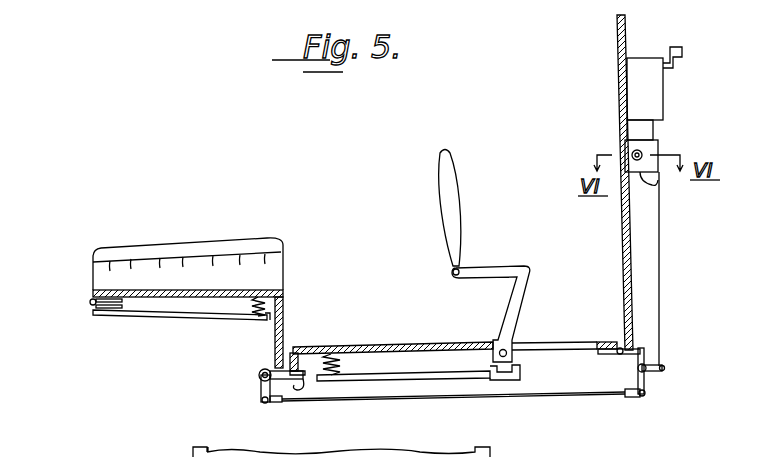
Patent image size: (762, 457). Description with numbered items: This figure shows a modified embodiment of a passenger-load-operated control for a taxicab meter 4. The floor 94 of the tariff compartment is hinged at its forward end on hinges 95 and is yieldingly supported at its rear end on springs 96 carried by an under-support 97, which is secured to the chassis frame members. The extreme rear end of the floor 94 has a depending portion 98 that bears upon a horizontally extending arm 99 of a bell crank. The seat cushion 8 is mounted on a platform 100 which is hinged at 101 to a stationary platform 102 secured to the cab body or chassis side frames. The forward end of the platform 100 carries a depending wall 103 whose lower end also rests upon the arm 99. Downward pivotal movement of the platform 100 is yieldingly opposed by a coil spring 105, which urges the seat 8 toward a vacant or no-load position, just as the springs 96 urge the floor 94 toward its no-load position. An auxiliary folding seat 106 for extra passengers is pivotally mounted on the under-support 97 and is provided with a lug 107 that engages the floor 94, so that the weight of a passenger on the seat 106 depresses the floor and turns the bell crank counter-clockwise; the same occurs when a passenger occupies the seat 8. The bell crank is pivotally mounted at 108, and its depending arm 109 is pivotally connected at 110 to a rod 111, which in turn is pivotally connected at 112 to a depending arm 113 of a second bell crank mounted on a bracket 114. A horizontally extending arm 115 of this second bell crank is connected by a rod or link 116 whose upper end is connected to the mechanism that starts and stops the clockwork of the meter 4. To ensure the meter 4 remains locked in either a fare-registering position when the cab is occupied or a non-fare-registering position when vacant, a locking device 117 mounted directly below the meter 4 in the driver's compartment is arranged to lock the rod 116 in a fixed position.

The meter 4 is at (656, 112).
The seat cushion 8 is at (186, 242).
The floor 94 is at (423, 345).
The hinges 95 is at (617, 353).
The springs 96 is at (346, 360).
The under-support 97 is at (430, 375).
The depending portion 98 is at (294, 350).
The horizontally extending arm 99 is at (311, 389).
The platform 100 is at (92, 294).
The hinge 101 is at (90, 304).
The stationary platform 102 is at (112, 321).
The depending wall 103 is at (284, 318).
The coil spring 105 is at (254, 306).
The auxiliary folding seat 106 is at (512, 229).
The lug 107 is at (497, 345).
The pivot 108 is at (258, 375).
The depending arm 109 is at (261, 388).
The pivotal connection 110 is at (265, 402).
The rod 111 is at (413, 397).
The pivotal connection 112 is at (644, 396).
The depending arm 113 is at (646, 384).
The bracket 114 is at (643, 352).
The horizontally extending arm 115 is at (666, 368).
The rod or link 116 is at (654, 128).
The locking device 117 is at (660, 186).